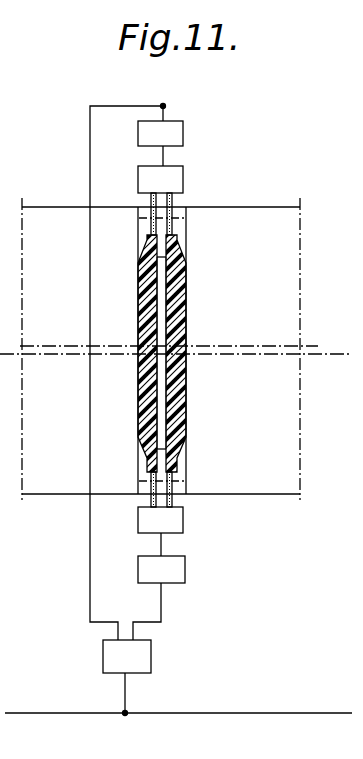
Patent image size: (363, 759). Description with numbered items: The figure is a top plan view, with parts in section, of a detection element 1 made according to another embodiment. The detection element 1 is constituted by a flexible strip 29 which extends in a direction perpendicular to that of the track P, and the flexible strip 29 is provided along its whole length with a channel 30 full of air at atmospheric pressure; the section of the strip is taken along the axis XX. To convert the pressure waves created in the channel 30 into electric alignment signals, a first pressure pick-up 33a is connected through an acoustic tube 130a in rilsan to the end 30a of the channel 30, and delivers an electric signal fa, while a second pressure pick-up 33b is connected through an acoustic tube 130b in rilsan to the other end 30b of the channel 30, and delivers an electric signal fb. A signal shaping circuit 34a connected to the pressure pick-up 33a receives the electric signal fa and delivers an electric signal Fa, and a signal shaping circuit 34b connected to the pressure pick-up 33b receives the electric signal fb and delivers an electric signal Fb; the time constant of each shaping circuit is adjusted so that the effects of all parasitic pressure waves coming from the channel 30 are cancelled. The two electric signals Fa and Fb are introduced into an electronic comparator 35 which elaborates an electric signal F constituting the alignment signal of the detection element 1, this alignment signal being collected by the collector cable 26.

The electric signal Fa is at (165, 104).
The electric signal fa is at (165, 156).
The signal shaping circuit 34a is at (183, 131).
The first pressure pick-up 33a is at (183, 177).
The acoustic tube 130a is at (173, 203).
The track P is at (287, 243).
The detection element 1 is at (186, 284).
The end of channel 30a is at (162, 260).
The channel 30 is at (160, 318).
The flexible strip 29 is at (176, 380).
The end of channel 30b is at (162, 449).
The section axis X-X XX is at (176, 350).
The acoustic tube 130b is at (173, 487).
The second pressure pick-up 33b is at (178, 518).
The electric signal fb is at (159, 545).
The signal shaping circuit 34b is at (177, 569).
The electric signal Fb is at (161, 600).
The electronic comparator 35 is at (140, 655).
The electric signal F is at (125, 692).
The collector cable 26 is at (233, 712).